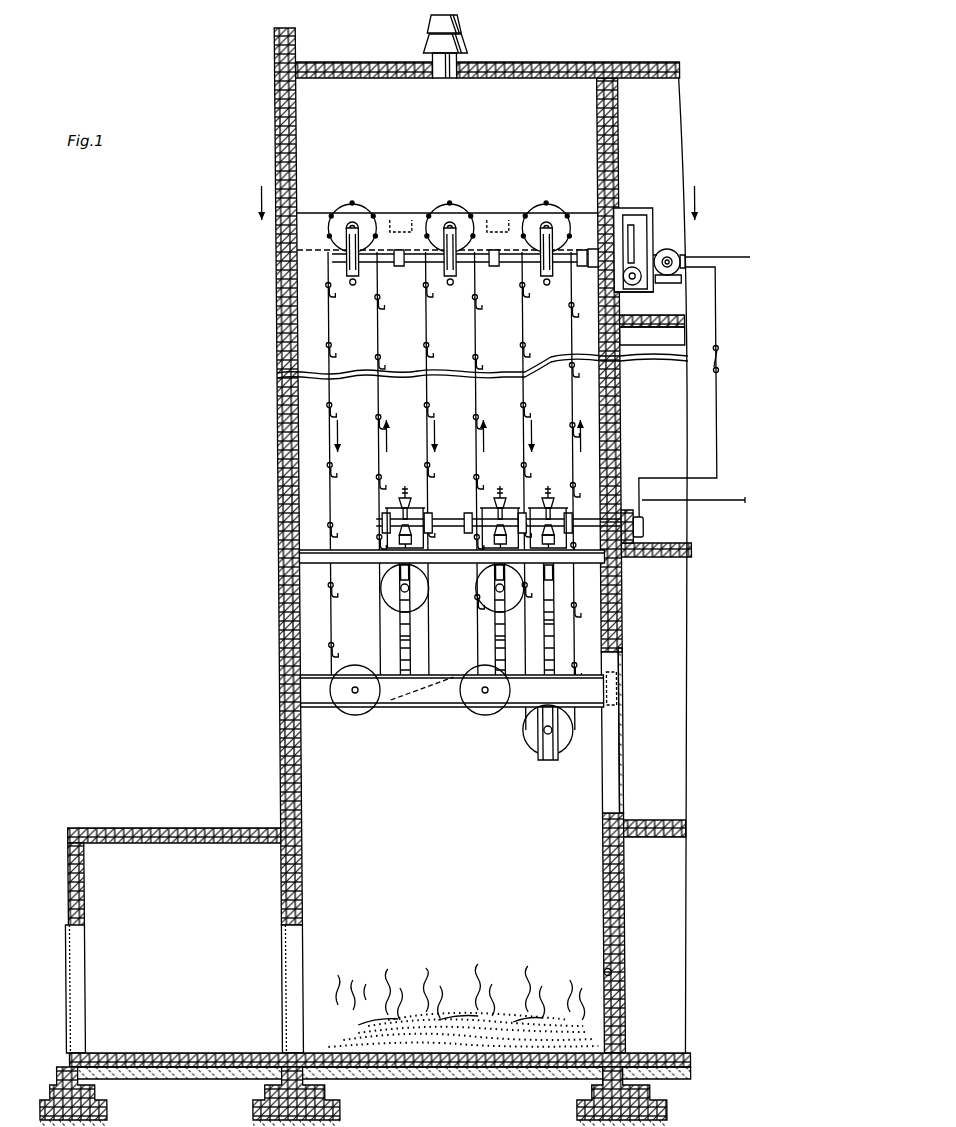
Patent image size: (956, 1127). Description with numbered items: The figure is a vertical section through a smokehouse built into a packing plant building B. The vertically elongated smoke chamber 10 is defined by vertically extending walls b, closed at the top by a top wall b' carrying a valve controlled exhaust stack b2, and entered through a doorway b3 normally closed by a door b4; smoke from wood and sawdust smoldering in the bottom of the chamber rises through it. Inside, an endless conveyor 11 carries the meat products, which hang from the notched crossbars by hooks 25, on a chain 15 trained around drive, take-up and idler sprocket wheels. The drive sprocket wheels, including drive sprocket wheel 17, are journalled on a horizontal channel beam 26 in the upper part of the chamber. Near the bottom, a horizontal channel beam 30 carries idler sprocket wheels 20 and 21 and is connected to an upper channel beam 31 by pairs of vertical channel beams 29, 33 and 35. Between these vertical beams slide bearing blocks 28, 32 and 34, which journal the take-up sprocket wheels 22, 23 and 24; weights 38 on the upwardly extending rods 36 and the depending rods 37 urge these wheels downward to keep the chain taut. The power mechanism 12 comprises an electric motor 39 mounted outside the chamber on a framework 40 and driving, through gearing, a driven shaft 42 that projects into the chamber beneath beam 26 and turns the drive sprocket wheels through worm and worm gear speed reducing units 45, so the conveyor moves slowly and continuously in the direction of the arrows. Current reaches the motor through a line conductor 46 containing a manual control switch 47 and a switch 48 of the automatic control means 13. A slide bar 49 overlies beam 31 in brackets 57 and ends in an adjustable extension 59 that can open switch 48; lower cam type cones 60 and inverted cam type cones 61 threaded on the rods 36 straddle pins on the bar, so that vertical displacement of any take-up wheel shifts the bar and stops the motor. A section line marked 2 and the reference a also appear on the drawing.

The smoke chamber 10 is at (291, 418).
The walls b is at (446, 565).
The top wall b' is at (487, 52).
The exhaust stack b2 is at (463, 50).
The doorway b3 is at (596, 806).
The door b4 is at (617, 789).
The section line 2 is at (478, 203).
The endless conveyor 11 is at (374, 327).
The power mechanism 12 is at (642, 292).
The automatic control means 13 is at (381, 511).
The chain 15 is at (569, 408).
The drive sprocket wheel 17 is at (604, 973).
The idler sprocket wheel 20 is at (359, 716).
The idler sprocket wheel 21 is at (487, 716).
The take-up sprocket wheel 22 is at (564, 747).
The take-up sprocket wheel 23 is at (506, 607).
The take-up sprocket wheel 24 is at (398, 594).
The hooks 25 is at (333, 466).
The channel beam 26 is at (311, 251).
The bearing block 28 is at (538, 746).
The channel beams 29 is at (551, 648).
The channel beam 30 is at (431, 708).
The channel beam 31 is at (357, 566).
The bearing block 32 is at (490, 594).
The channel beams 33 is at (490, 631).
The bearing block 34 is at (396, 601).
The channel beams 35 is at (396, 650).
The upwardly extending rods 36 is at (576, 582).
The depending rods 37 is at (409, 600).
The weights 38 is at (551, 627).
The electric motor 39 is at (663, 250).
The framework 40 is at (640, 208).
The driven shaft 42 is at (410, 265).
The speed reducing units 45 is at (362, 213).
The line conductor 46 is at (727, 256).
The control switch 47 is at (718, 360).
The switch 48 is at (636, 558).
The slide bar 49 is at (447, 528).
The brackets 57 is at (383, 541).
The adjustable extension 59 is at (600, 521).
The lower cam type cones 60 is at (488, 546).
The inverted cam type cones 61 is at (409, 511).
The supply line a is at (720, 237).
The packing plant building B is at (669, 572).